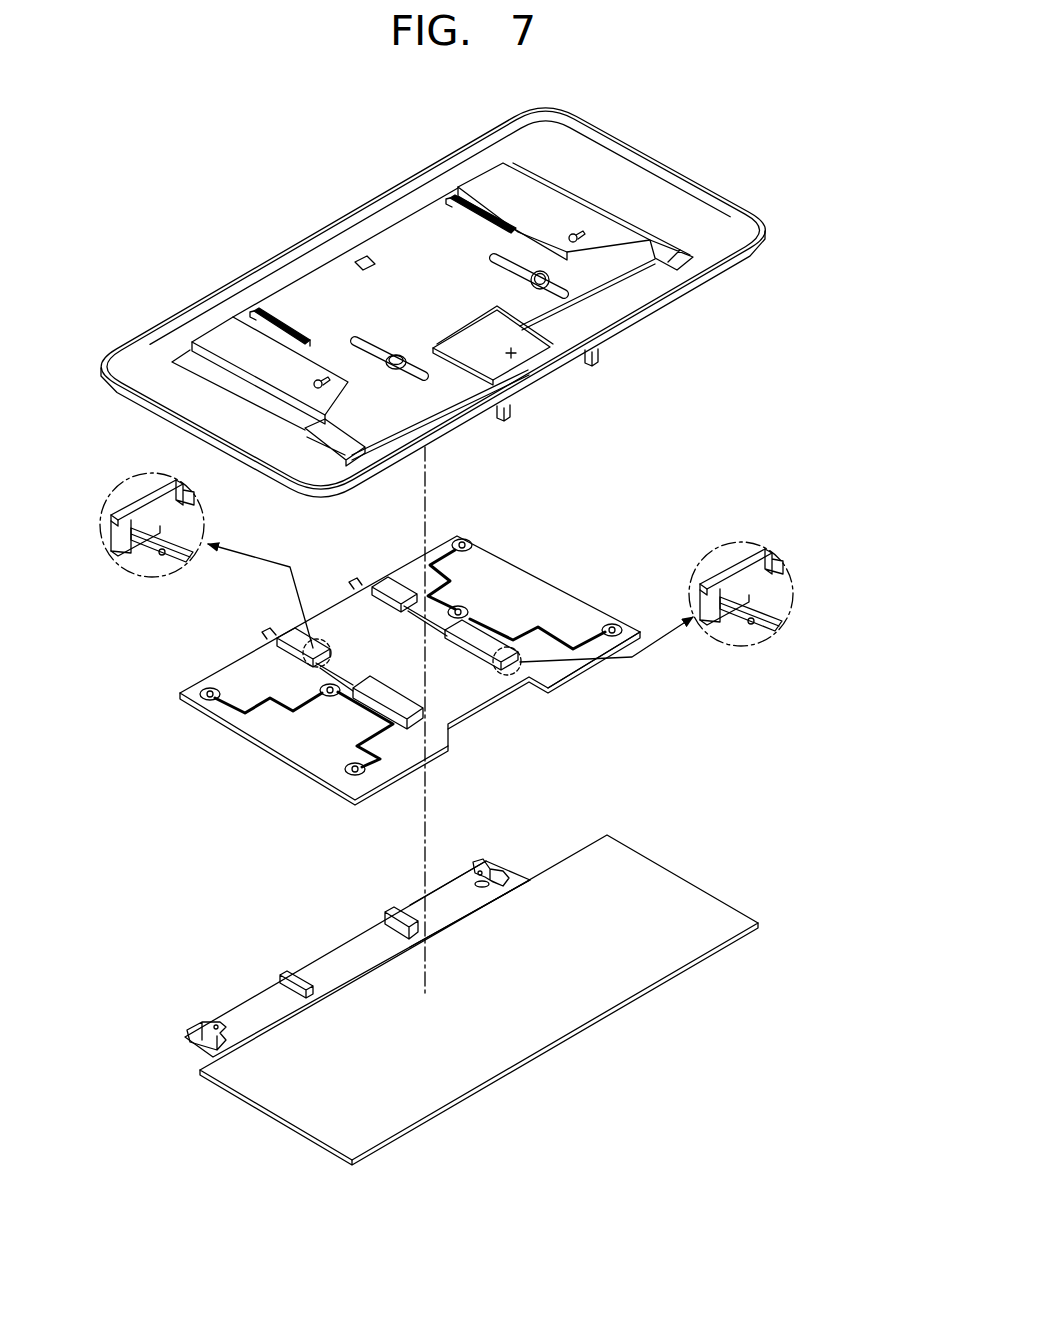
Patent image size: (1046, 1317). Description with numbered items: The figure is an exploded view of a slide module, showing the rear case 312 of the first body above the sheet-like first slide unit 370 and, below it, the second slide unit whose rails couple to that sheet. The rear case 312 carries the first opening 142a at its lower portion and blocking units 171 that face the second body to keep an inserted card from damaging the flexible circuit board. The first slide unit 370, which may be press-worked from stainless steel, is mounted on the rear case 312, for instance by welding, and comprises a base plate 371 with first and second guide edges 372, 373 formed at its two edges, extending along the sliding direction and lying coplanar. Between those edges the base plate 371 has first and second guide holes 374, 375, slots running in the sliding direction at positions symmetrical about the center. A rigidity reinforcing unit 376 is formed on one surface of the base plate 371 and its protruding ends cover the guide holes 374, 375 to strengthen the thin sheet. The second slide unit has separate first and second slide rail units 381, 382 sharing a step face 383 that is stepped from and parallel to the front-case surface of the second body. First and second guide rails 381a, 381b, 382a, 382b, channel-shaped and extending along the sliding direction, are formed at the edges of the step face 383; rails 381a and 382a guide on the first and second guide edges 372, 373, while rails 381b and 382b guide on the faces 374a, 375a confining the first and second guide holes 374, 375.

The rear case 312 is at (733, 272).
The blocking unit 171 is at (598, 364).
The first opening 142a is at (514, 357).
The first slide unit 370 is at (556, 552).
The base plate 371 is at (488, 550).
The first guide edge 372 is at (268, 740).
The second guide edge 373 is at (580, 599).
The first guide hole 374 is at (178, 558).
The face confining the first guide hole 374a is at (160, 560).
The second guide hole 375 is at (753, 617).
The face confining the second guide hole 375a is at (768, 599).
The rigidity reinforcing unit 376 is at (125, 492).
The first slide rail unit 381 is at (222, 1000).
The first guide rail of the first slide rail unit 381a is at (196, 1023).
The second guide rail of the first slide rail unit 381b is at (282, 975).
The second slide rail unit 382 is at (406, 889).
The first guide rail of the second slide rail unit 382a is at (388, 907).
The second guide rail of the second slide rail unit 382b is at (497, 870).
The step face 383 is at (250, 1028).